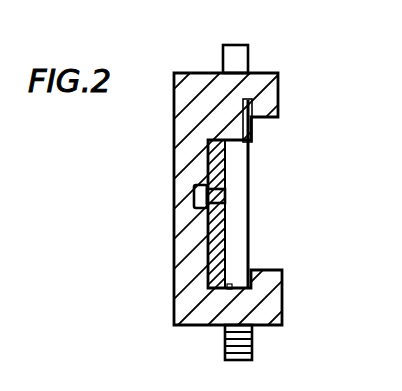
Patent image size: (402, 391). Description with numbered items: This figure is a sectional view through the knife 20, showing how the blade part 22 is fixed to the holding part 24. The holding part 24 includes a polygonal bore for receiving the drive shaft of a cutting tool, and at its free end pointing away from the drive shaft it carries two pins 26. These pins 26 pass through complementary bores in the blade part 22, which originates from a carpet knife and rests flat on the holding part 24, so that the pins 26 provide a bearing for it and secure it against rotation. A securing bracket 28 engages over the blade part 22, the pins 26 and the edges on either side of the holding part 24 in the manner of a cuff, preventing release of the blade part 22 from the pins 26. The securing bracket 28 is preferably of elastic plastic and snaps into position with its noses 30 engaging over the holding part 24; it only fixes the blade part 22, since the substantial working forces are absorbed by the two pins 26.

The knife 20 is at (303, 180).
The blade part 22 is at (228, 236).
The holding part 24 is at (246, 163).
The pins 26 is at (197, 183).
The securing bracket 28 is at (183, 73).
The noses 30 is at (272, 109).